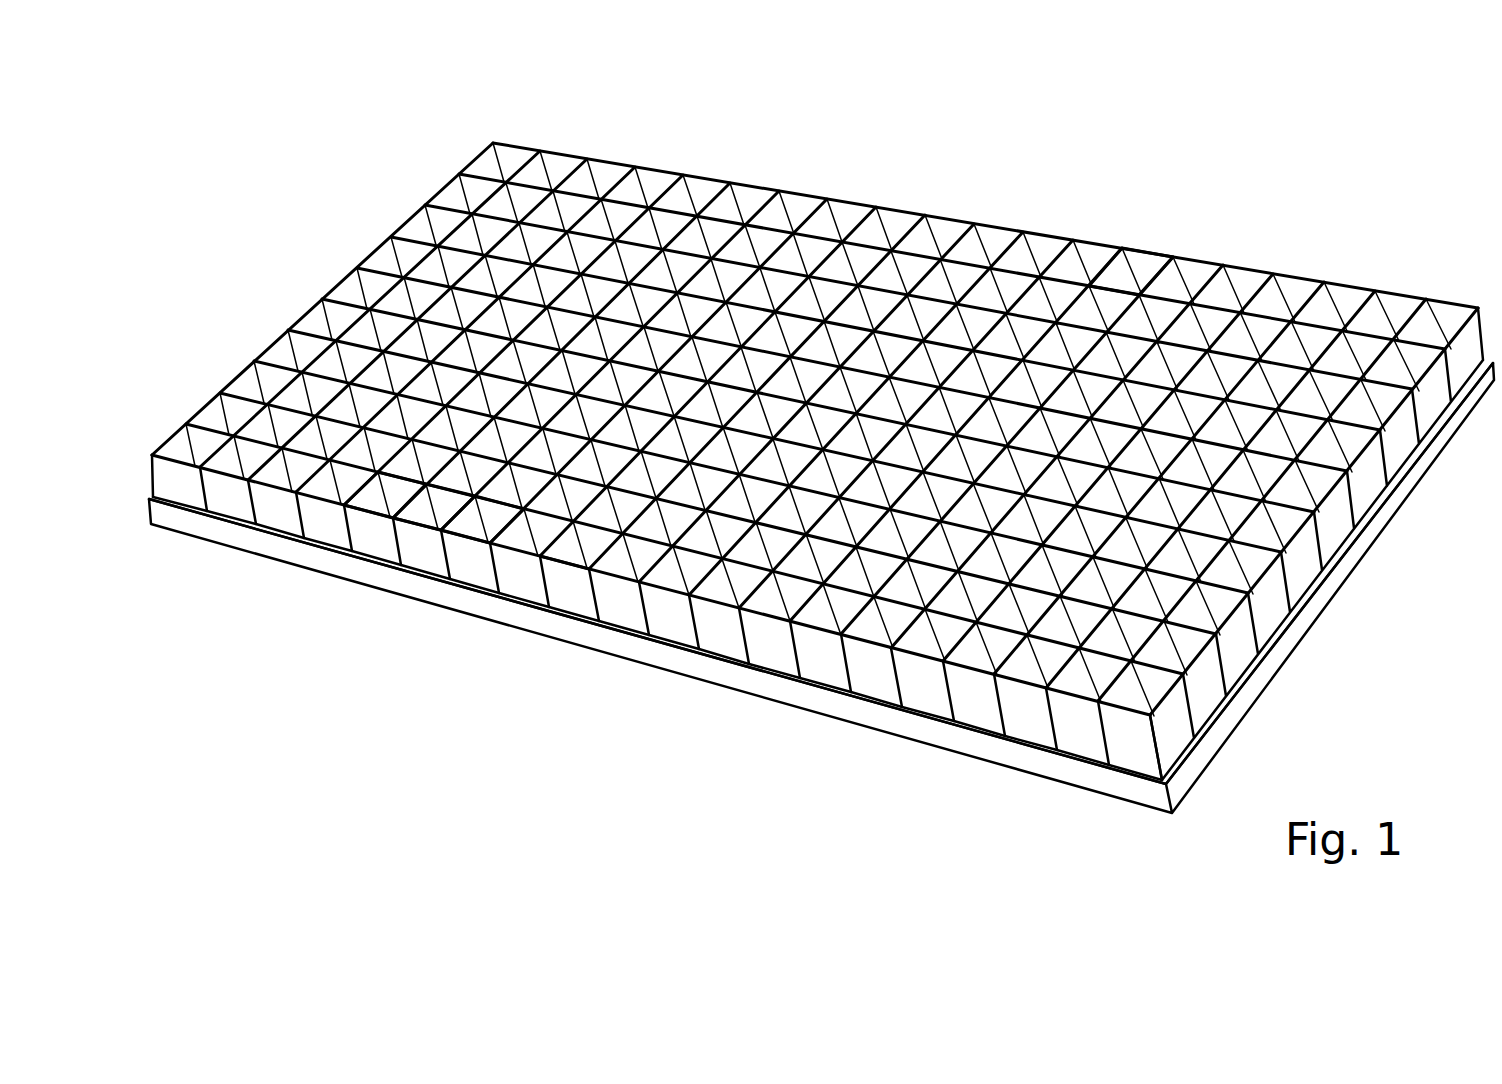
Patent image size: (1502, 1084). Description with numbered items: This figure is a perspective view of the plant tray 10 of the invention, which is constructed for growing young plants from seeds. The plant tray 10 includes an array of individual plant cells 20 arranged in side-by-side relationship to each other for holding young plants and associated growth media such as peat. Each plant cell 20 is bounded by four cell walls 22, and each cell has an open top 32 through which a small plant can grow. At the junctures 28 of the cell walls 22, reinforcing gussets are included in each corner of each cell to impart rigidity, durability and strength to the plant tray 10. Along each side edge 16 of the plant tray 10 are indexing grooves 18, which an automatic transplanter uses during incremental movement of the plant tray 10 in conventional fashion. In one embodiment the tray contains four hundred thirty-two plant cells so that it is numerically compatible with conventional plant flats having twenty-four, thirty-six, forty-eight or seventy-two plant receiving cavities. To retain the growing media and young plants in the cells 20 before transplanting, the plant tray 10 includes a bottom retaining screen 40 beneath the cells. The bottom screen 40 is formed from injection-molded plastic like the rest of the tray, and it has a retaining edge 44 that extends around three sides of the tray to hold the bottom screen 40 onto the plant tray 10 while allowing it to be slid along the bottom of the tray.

The plant tray 10 is at (944, 128).
The side edge 16 is at (1333, 535).
The indexing grooves 18 is at (1262, 624).
The plant cells 20 is at (492, 515).
The cell walls 22 is at (640, 553).
The junctures 28 is at (573, 530).
The open top 32 is at (1150, 270).
The bottom retaining screen 40 is at (1214, 746).
The retaining edge 44 is at (1243, 698).